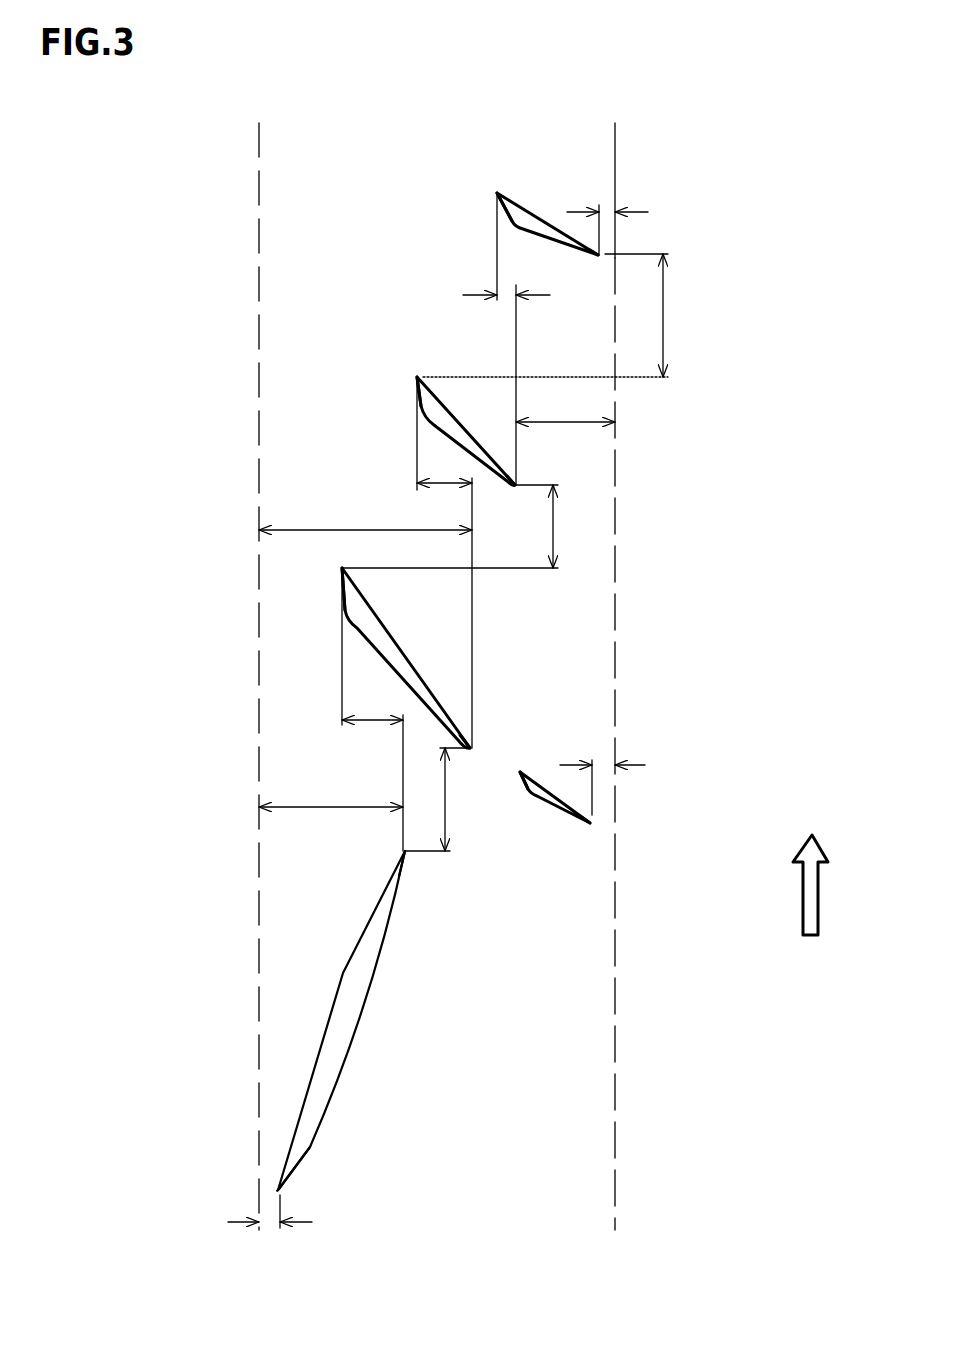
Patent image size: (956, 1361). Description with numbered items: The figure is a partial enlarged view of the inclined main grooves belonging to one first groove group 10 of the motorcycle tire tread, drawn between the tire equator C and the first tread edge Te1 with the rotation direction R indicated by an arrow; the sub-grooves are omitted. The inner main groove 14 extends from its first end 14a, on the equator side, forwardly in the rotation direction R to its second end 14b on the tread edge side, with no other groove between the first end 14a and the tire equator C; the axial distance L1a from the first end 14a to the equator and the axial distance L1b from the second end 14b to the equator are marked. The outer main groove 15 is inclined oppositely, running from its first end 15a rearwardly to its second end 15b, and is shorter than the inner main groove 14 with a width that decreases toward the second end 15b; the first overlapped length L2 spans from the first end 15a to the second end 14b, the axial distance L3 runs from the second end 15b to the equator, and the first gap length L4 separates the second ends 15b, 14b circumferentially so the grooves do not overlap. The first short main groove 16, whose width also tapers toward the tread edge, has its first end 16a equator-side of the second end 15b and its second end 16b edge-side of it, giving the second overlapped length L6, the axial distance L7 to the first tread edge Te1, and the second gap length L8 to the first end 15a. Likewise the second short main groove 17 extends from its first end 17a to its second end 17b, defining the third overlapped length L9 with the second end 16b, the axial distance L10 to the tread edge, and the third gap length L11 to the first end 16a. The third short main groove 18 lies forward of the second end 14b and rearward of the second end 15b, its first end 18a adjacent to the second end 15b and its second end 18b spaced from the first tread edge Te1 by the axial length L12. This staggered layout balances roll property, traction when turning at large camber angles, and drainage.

The first groove group 10 is at (557, 636).
The inner main groove 14 is at (342, 1018).
The first end of the inner main groove 14a is at (277, 1185).
The second end of the inner main groove 14b is at (407, 852).
The outer main groove 15 is at (357, 615).
The first end of the outer main groove 15a is at (342, 568).
The second end of the outer main groove 15b is at (470, 748).
The first short main groove 16 is at (433, 407).
The first end of the first short main groove 16a is at (417, 377).
The second end of the first short main groove 16b is at (516, 484).
The second short main groove 17 is at (520, 217).
The first end of the second short main groove 17a is at (497, 193).
The second end of the second short main groove 17b is at (602, 253).
The third short main groove 18 is at (557, 803).
The first end of the third short main groove 18a is at (518, 773).
The second end of the third short main groove 18b is at (590, 822).
The tire equator C is at (258, 662).
The first tread edge Te1 is at (614, 662).
The rotation direction R is at (810, 870).
The axial distance from the first end of the inner main groove to the tire equator L1a is at (270, 1221).
The axial distance from the second end of the inner main groove to the tire equator L1b is at (331, 793).
The first overlapped length L2 is at (372, 709).
The axial distance from the second end of the outer main groove to the tire equator L3 is at (365, 515).
The first gap length L4 is at (444, 799).
The second overlapped length L6 is at (444, 562).
The axial distance from the second end of the first short main groove to the first t L7 is at (565, 407).
The second gap length L8 is at (552, 525).
The third overlapped length L9 is at (505, 292).
The axial distance from the second end of the second short main groove to the first L10 is at (606, 210).
The third gap length L11 is at (572, 315).
The axial length from the second end of the third short main groove to the first tre L12 is at (608, 763).